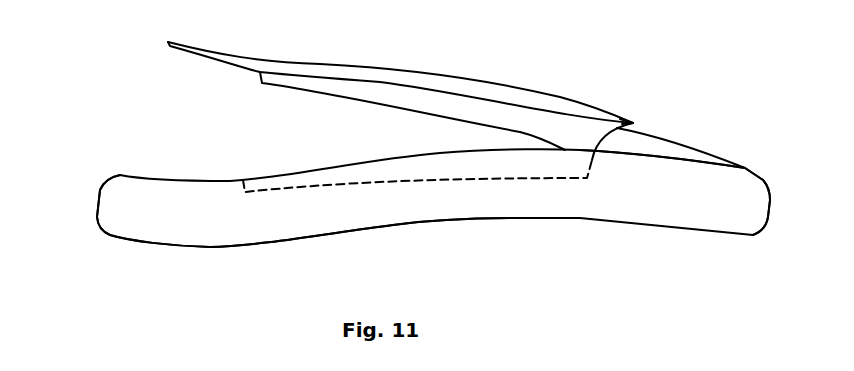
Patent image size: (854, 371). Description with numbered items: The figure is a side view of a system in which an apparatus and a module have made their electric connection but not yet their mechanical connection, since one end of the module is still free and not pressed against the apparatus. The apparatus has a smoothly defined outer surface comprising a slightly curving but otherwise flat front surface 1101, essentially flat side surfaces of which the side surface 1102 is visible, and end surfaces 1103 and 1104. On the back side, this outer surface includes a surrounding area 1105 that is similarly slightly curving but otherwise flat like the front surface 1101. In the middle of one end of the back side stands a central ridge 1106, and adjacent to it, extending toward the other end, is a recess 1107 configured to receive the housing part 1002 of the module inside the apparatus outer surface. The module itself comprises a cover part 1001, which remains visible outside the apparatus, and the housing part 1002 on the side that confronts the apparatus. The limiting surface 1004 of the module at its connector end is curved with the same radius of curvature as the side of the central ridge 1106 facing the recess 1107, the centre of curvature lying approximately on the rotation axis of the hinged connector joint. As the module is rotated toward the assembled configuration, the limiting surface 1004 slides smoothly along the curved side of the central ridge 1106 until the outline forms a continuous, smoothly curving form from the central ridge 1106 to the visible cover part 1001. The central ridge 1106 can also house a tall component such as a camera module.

The cover part 1001 is at (431, 67).
The housing part 1002 is at (290, 84).
The limiting surface 1004 is at (632, 124).
The front surface 1101 is at (394, 233).
The side surface 1102 is at (213, 227).
The end surface 1103 is at (88, 203).
The end surface 1104 is at (780, 194).
The surrounding area 1105 is at (696, 156).
The central ridge 1106 is at (660, 137).
The recess 1107 is at (275, 176).